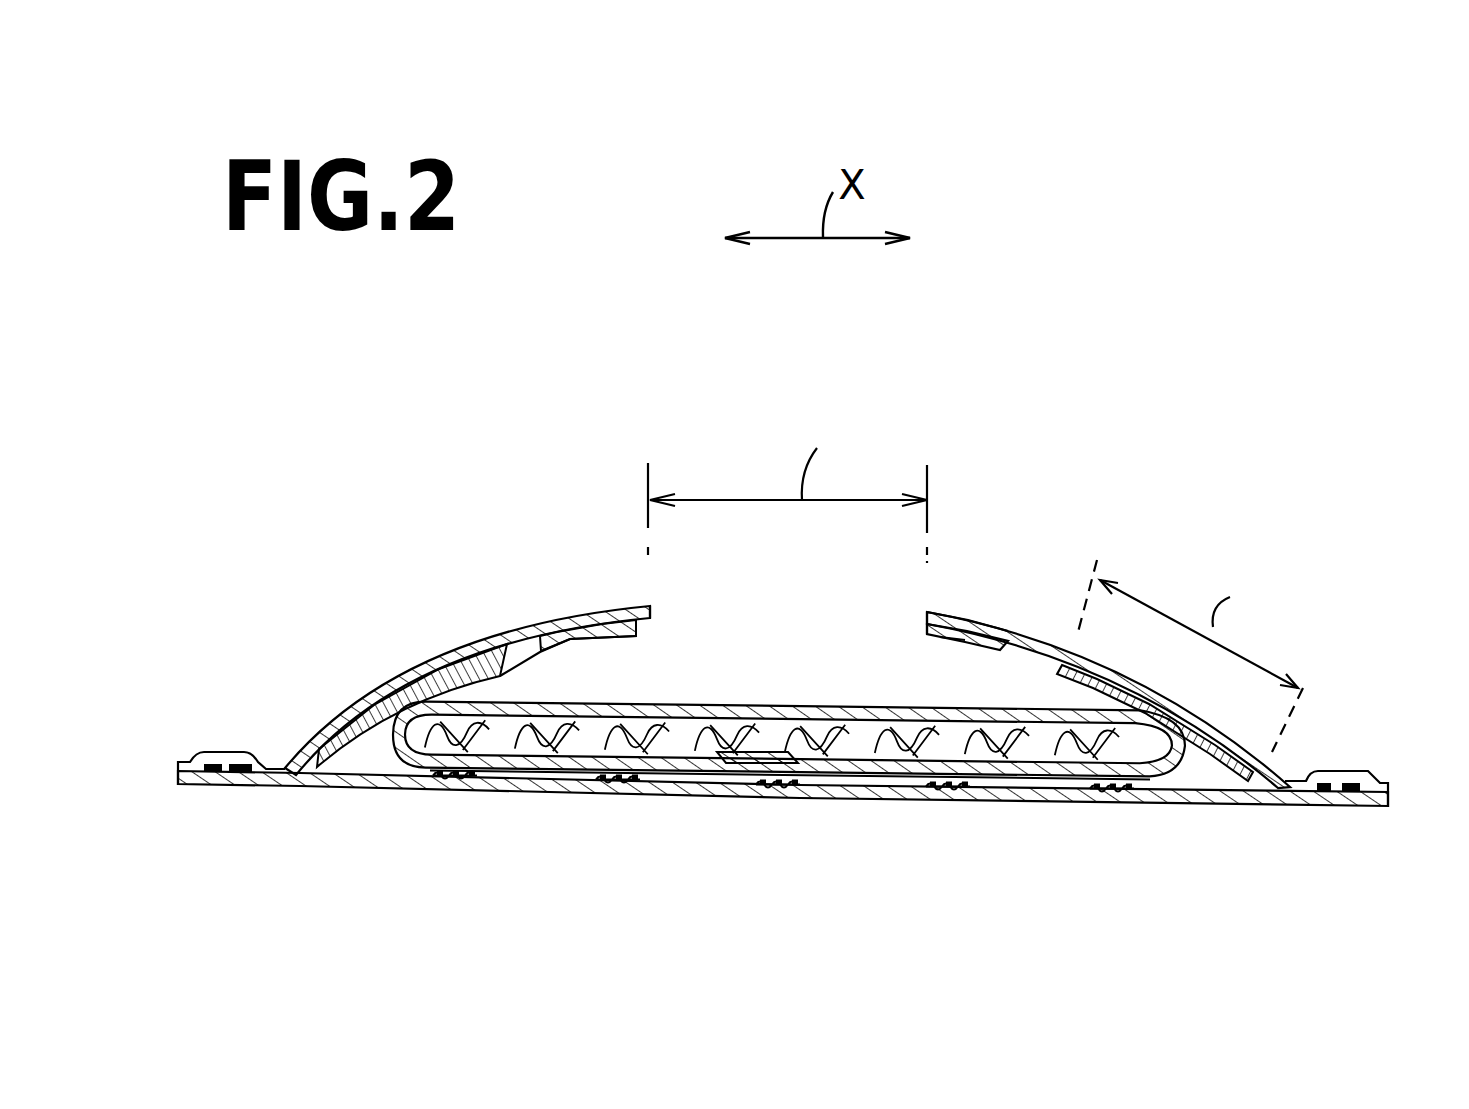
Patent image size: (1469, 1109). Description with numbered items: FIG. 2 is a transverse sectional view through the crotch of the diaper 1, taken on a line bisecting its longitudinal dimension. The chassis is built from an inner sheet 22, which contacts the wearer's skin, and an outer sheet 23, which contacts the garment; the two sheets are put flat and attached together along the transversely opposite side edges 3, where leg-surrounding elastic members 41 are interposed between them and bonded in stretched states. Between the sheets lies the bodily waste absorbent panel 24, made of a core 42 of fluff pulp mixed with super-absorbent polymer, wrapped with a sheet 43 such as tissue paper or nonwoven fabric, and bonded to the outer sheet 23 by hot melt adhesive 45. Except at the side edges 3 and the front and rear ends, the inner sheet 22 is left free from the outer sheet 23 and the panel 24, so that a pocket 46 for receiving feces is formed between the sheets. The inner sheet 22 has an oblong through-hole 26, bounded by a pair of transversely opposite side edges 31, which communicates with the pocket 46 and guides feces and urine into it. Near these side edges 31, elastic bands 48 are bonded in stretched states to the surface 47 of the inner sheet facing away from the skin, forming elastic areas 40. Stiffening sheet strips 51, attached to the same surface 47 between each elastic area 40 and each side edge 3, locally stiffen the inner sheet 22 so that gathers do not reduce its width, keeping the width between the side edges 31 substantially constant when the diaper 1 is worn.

The diaper 1 is at (1173, 397).
The side edges 3 is at (183, 760).
The inner sheet 22 is at (505, 632).
The outer sheet 23 is at (1193, 800).
The bodily waste absorbent panel 24 is at (808, 705).
The through-hole 26 is at (712, 628).
The side edges of the through-hole 31 is at (650, 615).
The elastic areas 40 is at (986, 569).
The leg-surrounding elastic members 41 is at (220, 768).
The core 42 is at (540, 730).
The sheet 43 is at (612, 716).
The hot melt adhesive 45 is at (443, 776).
The pocket 46 is at (958, 668).
The surface facing away from the wearer's skin 47 is at (548, 648).
The elastic bands 48 is at (613, 637).
The stiffening sheet strips 51 is at (370, 737).